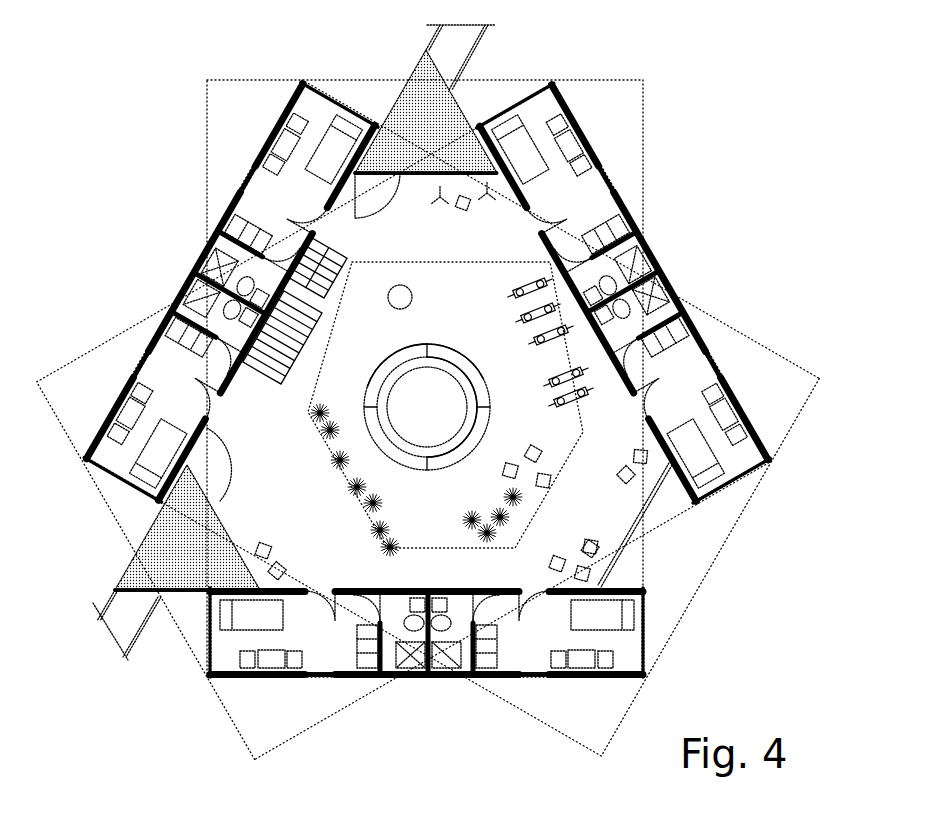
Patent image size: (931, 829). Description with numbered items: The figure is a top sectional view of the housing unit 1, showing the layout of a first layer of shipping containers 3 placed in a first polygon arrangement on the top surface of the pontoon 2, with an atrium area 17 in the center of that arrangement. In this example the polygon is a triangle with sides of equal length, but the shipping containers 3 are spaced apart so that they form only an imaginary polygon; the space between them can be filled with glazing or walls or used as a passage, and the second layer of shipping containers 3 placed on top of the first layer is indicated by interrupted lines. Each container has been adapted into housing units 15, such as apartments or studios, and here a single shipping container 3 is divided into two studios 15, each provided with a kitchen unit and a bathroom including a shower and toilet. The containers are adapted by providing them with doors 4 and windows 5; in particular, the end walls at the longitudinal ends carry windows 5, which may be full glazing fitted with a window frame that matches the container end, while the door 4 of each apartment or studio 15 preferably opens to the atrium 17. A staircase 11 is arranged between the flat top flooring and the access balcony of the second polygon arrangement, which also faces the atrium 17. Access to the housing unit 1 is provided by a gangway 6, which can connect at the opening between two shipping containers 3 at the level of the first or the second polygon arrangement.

The housing unit 1 is at (428, 394).
The pontoon 2 is at (633, 523).
The shipping container 3 is at (186, 226).
The door 4 is at (302, 228).
The window 5 is at (347, 105).
The gangway 6 is at (455, 40).
The staircase 11 is at (332, 345).
The housing unit (apartment or studio) 15 is at (293, 213).
The atrium 17 is at (472, 317).